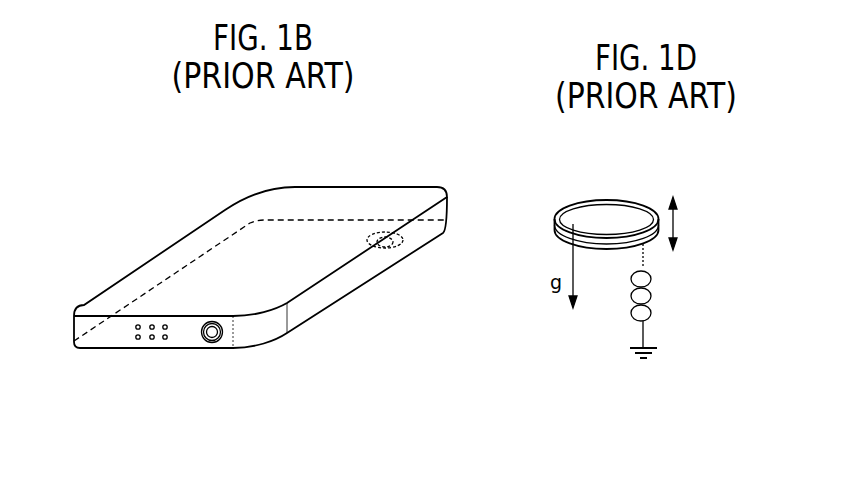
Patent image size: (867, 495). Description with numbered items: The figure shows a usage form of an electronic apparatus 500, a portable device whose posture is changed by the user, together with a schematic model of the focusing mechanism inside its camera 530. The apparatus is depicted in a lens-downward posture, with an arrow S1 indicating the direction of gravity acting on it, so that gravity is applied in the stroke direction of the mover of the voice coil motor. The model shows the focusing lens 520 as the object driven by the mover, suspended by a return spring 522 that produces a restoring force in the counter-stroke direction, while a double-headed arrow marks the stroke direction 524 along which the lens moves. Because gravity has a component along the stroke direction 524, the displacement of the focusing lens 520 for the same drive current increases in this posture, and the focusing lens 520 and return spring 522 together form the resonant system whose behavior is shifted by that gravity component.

In FIG. 1B, the electronic apparatus 500 is at (345, 200).
In FIG. 1B, the camera 530 is at (397, 258).
In FIG. 1B, the vibration direction S1 is at (182, 297).
In FIG. 1D, the focusing lens 520 is at (603, 208).
In FIG. 1D, the return spring 522 is at (653, 298).
In FIG. 1D, the stroke direction 524 is at (679, 222).